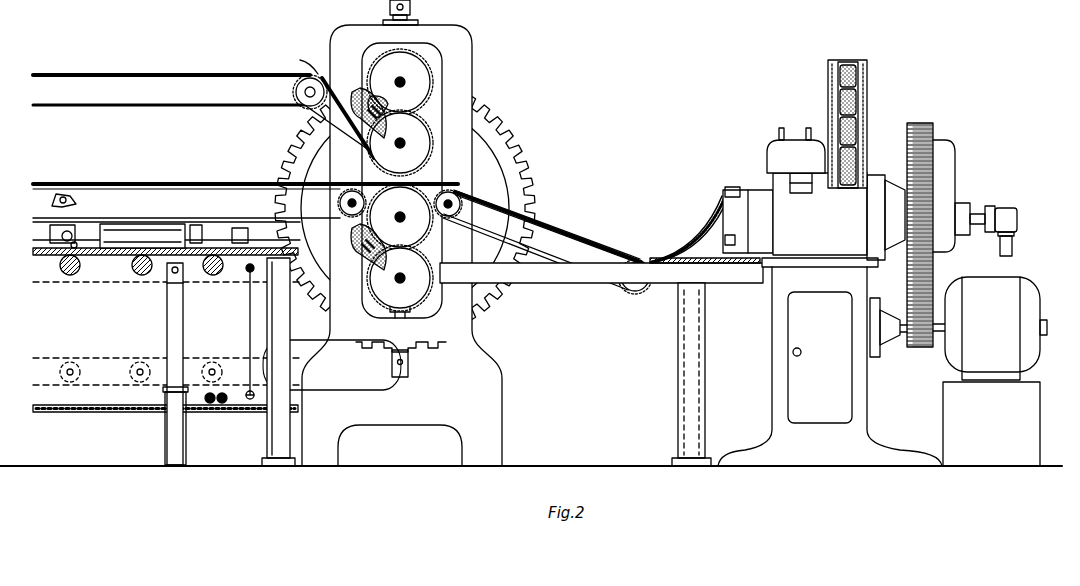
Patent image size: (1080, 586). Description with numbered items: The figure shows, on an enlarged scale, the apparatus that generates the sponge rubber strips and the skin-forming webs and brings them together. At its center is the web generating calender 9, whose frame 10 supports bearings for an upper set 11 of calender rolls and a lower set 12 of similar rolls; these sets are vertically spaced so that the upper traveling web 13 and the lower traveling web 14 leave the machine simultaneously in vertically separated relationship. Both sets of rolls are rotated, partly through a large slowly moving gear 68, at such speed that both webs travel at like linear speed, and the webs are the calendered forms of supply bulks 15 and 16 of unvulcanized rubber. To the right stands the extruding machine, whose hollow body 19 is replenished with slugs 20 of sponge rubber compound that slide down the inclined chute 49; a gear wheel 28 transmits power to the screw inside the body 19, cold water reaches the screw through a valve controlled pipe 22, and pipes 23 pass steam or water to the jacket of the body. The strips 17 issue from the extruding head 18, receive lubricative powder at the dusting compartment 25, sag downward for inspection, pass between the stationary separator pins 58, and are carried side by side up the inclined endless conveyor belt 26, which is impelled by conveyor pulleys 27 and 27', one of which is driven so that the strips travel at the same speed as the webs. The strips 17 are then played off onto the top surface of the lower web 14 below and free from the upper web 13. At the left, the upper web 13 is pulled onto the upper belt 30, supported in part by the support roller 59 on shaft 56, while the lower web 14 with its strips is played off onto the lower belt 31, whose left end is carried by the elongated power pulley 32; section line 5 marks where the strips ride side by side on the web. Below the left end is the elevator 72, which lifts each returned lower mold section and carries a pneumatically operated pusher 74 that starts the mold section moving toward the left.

The section line 5 is at (250, 208).
The web generating calender 9 is at (390, 232).
The frame 10 is at (473, 103).
The upper set of calender rolls 11 is at (430, 114).
The lower set of calender rolls 12 is at (430, 236).
The upper traveling web 13 is at (187, 75).
The lower traveling web 14 is at (33, 186).
The supply bulk 15 is at (360, 90).
The supply bulk 16 is at (348, 264).
The strips of sponge rubber compound 17 is at (33, 183).
The extruding head 18 is at (762, 186).
The extruder body 19 is at (830, 319).
The slugs 20 is at (848, 128).
The valve controlled pipe 22 is at (988, 210).
The pipes 23 is at (808, 128).
The dusting compartment 25 is at (725, 191).
The endless conveyor belt 26 is at (546, 246).
The conveyor pulley 27 is at (466, 211).
The conveyor pulley 27' is at (627, 284).
The gear wheel 28 is at (942, 284).
The upper conveyor belt 30 is at (142, 104).
The lower conveyor belt 31 is at (115, 218).
The elongated power pulley 32 is at (338, 204).
The inclined chute 49 is at (866, 78).
The shaft 56 is at (302, 57).
The separator pins 58 is at (616, 260).
The support roller 59 is at (294, 93).
The gear 68 is at (518, 152).
The elevator 72 is at (102, 270).
The pneumatically operated pusher 74 is at (170, 226).